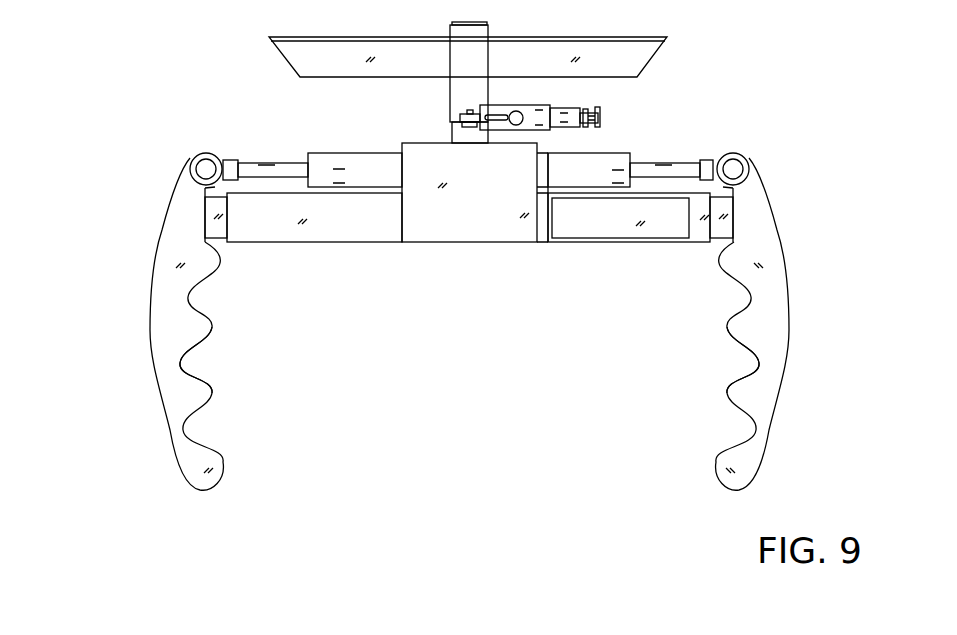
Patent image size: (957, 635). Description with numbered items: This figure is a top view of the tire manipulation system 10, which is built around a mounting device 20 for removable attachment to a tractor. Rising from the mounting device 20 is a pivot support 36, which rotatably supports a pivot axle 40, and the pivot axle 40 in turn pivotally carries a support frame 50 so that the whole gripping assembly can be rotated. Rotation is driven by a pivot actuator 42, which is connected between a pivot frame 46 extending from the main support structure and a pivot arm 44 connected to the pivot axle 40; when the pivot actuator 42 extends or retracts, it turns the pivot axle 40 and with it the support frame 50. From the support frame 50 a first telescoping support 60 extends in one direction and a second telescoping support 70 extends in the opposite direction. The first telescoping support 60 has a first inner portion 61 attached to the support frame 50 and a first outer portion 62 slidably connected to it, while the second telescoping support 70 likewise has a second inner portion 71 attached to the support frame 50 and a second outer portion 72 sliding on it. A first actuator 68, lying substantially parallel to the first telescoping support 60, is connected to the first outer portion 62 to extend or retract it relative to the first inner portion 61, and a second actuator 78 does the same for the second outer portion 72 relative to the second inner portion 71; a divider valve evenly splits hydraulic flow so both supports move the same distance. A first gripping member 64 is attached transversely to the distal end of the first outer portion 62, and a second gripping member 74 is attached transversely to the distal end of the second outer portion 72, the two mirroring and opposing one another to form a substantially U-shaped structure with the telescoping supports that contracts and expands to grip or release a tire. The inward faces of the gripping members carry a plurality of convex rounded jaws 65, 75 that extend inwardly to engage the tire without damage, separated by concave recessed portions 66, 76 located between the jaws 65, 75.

The tire manipulation system 10 is at (108, 102).
The mounting device 20 is at (655, 58).
The pivot support 36 is at (462, 41).
The pivot axle 40 is at (487, 137).
The pivot actuator 42 is at (527, 108).
The pivot arm 44 is at (453, 133).
The pivot frame 46 is at (587, 100).
The support frame 50 is at (468, 218).
The first telescoping support 60 is at (291, 253).
The first inner portion 61 is at (340, 232).
The first outer portion 62 is at (218, 228).
The first gripping member 64 is at (150, 348).
The jaws 65 is at (212, 393).
The recessed portions 66 is at (182, 362).
The first actuator 68 is at (340, 150).
The second telescoping support 70 is at (686, 258).
The second inner portion 71 is at (703, 207).
The second outer portion 72 is at (725, 227).
The second gripping member 74 is at (790, 313).
The jaws 75 is at (727, 393).
The recessed portions 76 is at (750, 360).
The second actuator 78 is at (622, 150).